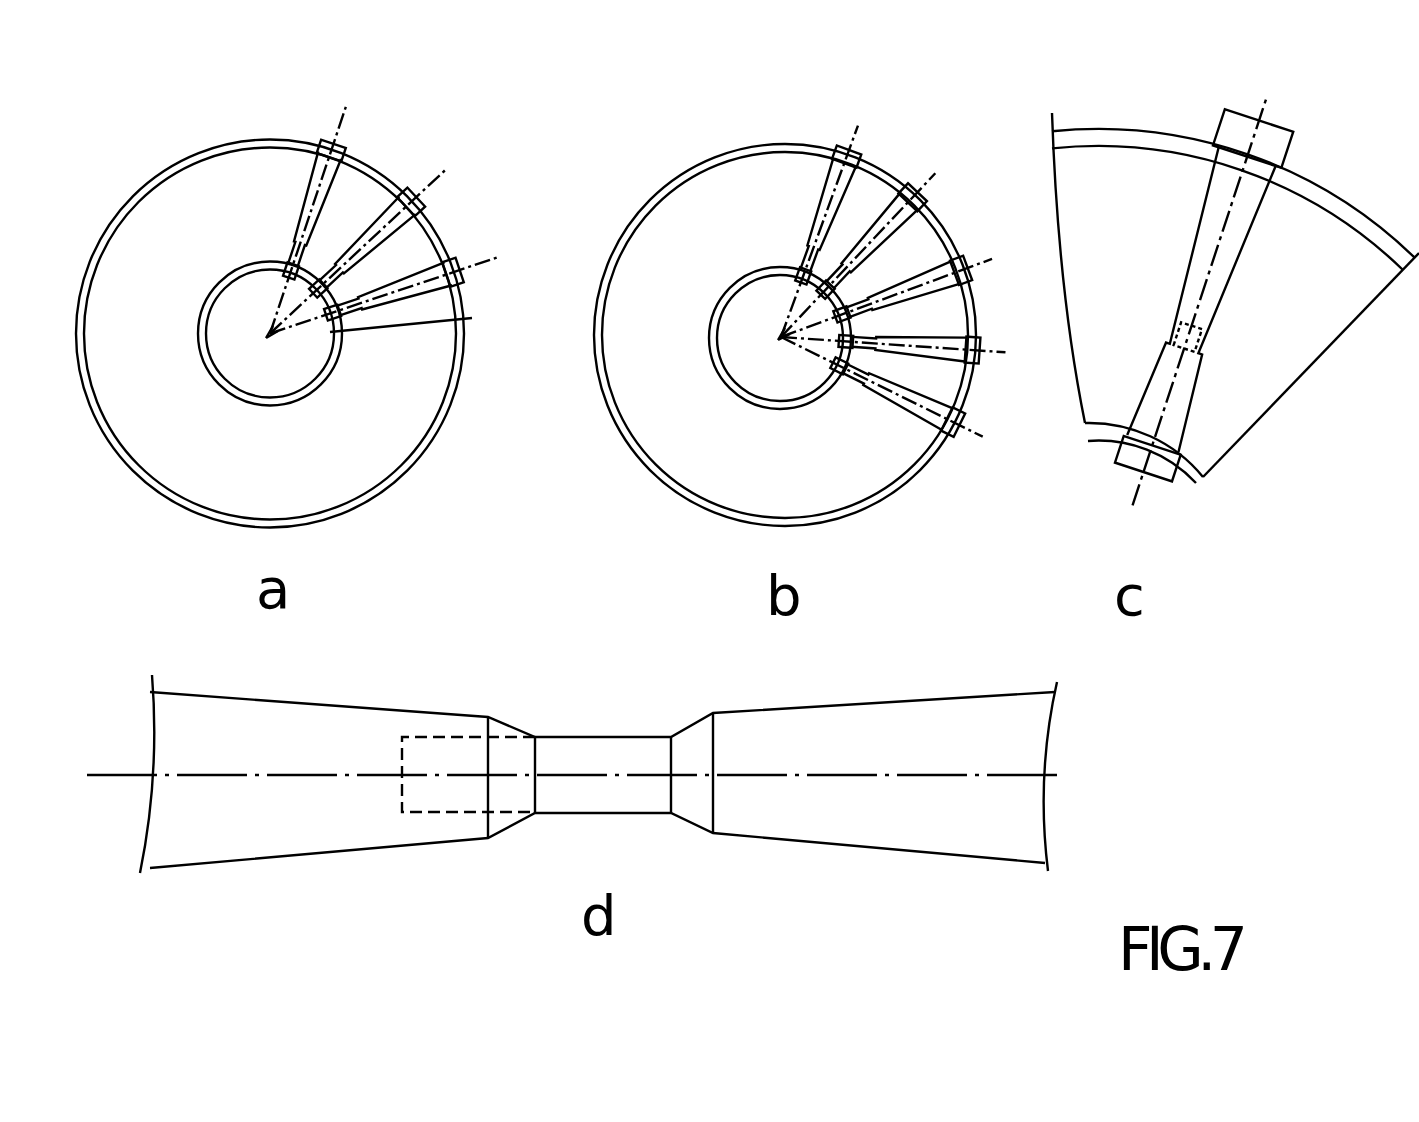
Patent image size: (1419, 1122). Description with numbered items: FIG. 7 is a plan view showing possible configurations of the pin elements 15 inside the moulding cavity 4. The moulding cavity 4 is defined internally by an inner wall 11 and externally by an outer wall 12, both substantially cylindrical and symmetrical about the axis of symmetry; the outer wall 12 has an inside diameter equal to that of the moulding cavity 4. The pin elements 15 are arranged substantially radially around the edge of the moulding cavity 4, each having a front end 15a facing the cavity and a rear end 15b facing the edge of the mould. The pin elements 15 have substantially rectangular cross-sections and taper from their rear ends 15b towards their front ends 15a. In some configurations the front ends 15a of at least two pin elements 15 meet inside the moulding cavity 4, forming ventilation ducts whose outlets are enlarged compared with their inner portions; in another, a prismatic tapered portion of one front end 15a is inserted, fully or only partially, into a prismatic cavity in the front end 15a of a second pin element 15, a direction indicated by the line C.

The moulding cavity 4 is at (125, 290).
The inner wall 11 is at (203, 292).
The outer wall 12 is at (172, 166).
The pin element 15 is at (412, 276).
The front end 15a is at (318, 224).
The rear end 15b is at (402, 190).
The circumferential direction line C is at (383, 336).